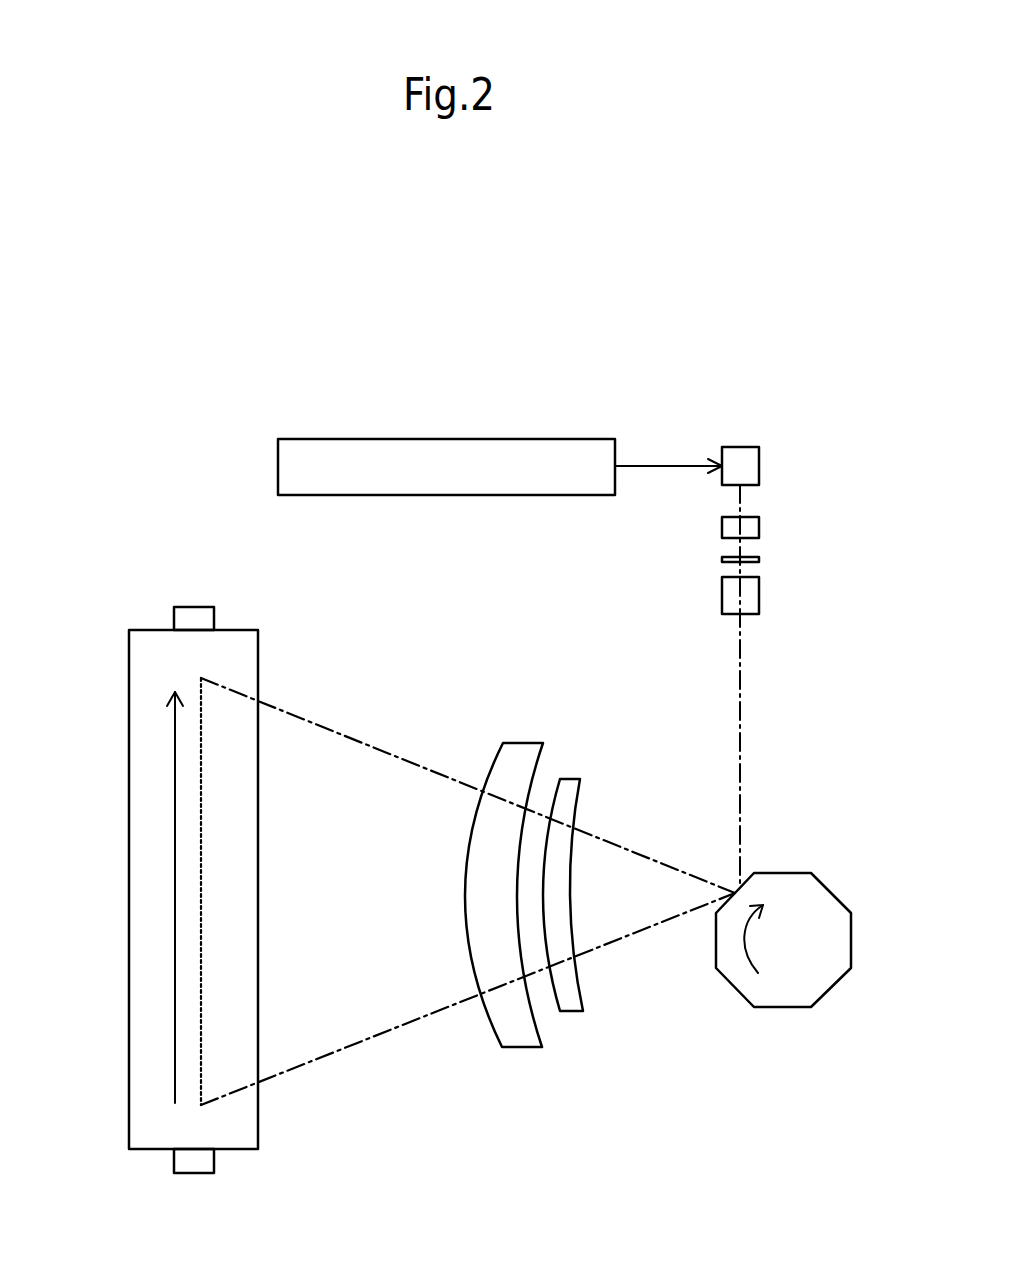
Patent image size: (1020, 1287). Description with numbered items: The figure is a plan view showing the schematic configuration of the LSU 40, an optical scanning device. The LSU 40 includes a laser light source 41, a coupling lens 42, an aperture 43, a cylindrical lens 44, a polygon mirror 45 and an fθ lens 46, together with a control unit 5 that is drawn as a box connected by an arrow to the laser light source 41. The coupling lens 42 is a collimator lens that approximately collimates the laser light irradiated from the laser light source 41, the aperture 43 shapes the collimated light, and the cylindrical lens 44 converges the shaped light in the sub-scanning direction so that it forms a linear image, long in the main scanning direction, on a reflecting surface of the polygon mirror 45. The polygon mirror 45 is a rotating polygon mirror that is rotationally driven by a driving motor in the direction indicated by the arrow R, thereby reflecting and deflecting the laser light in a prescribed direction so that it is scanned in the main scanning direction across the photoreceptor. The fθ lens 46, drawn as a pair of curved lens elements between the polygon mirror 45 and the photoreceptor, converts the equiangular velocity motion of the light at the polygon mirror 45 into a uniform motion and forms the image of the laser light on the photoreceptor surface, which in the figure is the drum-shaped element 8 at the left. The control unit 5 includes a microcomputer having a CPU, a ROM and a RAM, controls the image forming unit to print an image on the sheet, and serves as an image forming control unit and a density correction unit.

The LSU 40 is at (205, 403).
The control unit 5 is at (433, 439).
The laser light source 41 is at (759, 466).
The coupling lens 42 is at (759, 531).
The aperture 43 is at (759, 560).
The cylindrical lens 44 is at (759, 598).
The polygon mirror 45 is at (782, 1007).
The fθ lens 46 is at (563, 1068).
The photoconductor drum 8 is at (129, 670).